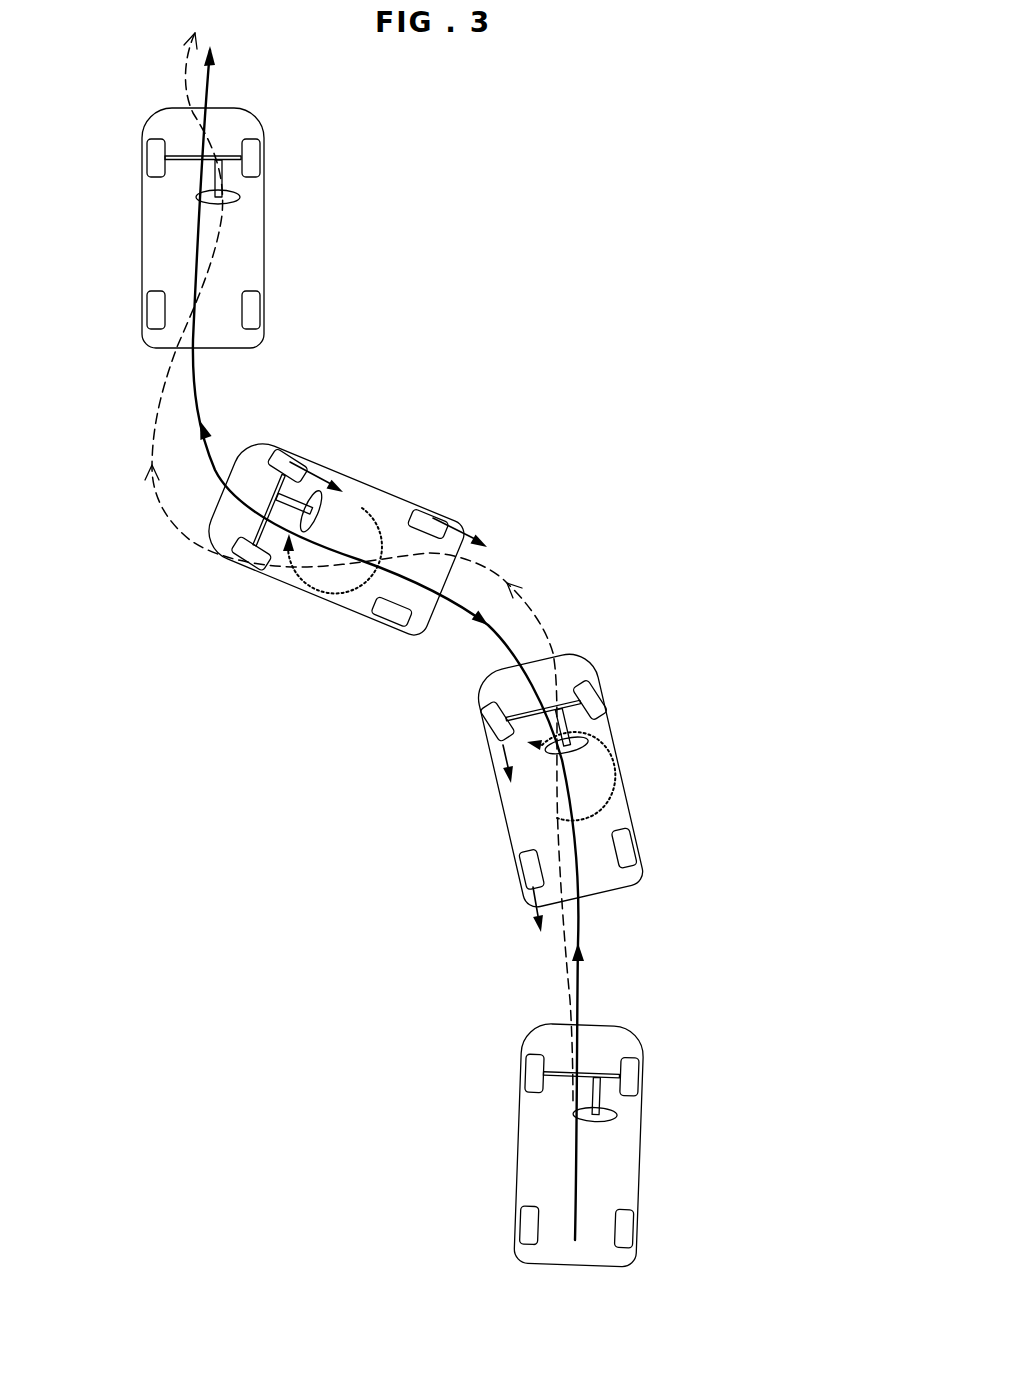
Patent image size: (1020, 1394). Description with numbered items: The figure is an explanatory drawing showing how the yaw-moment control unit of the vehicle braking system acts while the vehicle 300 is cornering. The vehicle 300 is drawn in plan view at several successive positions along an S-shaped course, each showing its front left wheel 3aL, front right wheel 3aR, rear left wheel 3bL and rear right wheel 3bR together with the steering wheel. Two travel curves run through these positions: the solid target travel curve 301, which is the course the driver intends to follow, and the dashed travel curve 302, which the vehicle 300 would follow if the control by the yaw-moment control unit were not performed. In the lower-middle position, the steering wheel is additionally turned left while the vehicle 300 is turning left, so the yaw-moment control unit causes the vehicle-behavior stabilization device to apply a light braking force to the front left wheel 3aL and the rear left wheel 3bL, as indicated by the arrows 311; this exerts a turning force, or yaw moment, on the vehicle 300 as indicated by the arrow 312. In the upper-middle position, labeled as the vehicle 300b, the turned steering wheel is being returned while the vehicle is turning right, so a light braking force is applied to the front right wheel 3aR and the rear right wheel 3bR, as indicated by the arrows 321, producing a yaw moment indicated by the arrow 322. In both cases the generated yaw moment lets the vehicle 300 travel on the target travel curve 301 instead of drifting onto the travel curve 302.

The front left wheel 3aL is at (155, 160).
The front right wheel 3aR is at (258, 160).
The rear left wheel 3bL is at (155, 312).
The rear right wheel 3bR is at (255, 310).
The vehicle 300 is at (263, 232).
The vehicle turning right 300b is at (492, 445).
The target travel curve 301 is at (470, 613).
The travel curve without control 302 is at (542, 620).
The arrows indicating braking force on left wheels 311 is at (502, 755).
The arrow indicating turning force 312 is at (610, 798).
The arrows indicating braking force on right wheels 321 is at (312, 470).
The arrow indicating turning force 322 is at (328, 598).